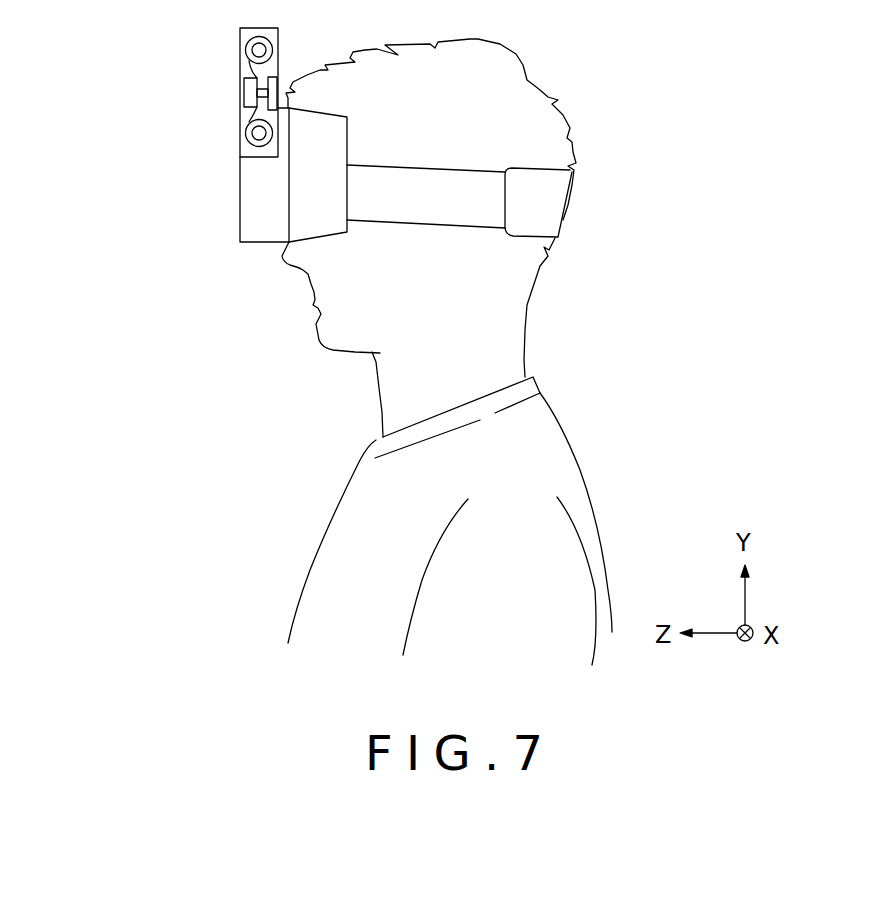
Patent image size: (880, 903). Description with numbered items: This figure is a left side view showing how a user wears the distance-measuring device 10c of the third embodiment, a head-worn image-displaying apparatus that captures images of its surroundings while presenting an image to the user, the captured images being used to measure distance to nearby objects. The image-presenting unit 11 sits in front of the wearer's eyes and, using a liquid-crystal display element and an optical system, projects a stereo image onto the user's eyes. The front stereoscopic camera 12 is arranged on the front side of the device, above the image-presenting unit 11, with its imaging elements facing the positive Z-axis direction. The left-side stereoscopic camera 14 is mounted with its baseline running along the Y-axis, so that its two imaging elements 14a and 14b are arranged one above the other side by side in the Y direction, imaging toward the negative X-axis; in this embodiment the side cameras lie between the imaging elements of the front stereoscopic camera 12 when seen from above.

The distance-measuring device 10c is at (188, 182).
The image-presenting unit 11 is at (240, 223).
The front stereoscopic camera 12 is at (243, 93).
The left-side stereoscopic camera 14 is at (80, 40).
The imaging element 14a is at (241, 36).
The imaging element 14b is at (240, 146).